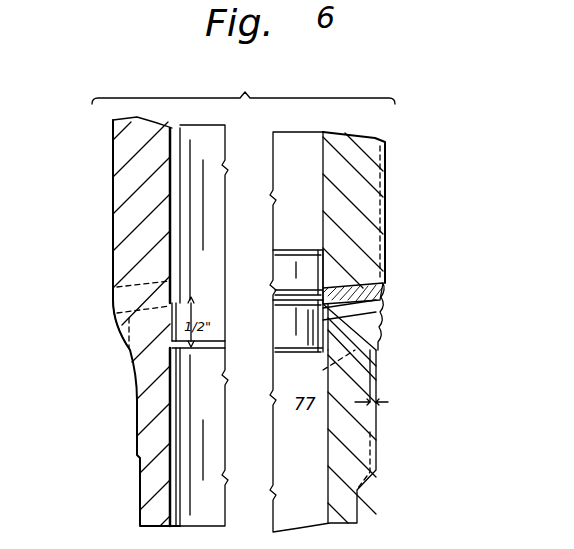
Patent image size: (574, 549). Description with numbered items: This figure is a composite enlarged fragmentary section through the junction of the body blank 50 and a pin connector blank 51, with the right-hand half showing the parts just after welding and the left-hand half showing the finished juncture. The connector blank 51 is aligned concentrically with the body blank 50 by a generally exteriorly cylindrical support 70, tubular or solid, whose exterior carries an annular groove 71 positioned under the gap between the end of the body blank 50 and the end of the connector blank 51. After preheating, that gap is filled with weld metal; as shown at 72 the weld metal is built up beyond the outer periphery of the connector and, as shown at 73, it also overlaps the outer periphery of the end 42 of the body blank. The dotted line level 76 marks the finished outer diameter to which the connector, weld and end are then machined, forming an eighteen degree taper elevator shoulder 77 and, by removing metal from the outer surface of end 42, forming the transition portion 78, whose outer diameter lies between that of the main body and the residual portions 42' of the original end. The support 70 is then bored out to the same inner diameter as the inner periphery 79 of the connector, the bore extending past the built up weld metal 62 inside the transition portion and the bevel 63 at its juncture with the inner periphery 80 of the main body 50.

The pin connector blank 51 is at (120, 183).
The transition portion 78 is at (137, 420).
The elevator shoulder 77 is at (130, 338).
The residual portion of original end 42' is at (96, 353).
The dotted line level 76 is at (385, 188).
The inner periphery of the connector 79 is at (330, 160).
The body blank 50 is at (345, 508).
The inner periphery of the main body 80 is at (330, 468).
The annular groove 71 is at (298, 293).
The support 70 is at (290, 322).
The built up weld metal 72 is at (375, 290).
The weld metal overlap 73 is at (380, 318).
The built up weld metal inside the transition portion 62 is at (383, 336).
The bevel 63 is at (383, 348).
The end of the body blank 42 is at (396, 419).